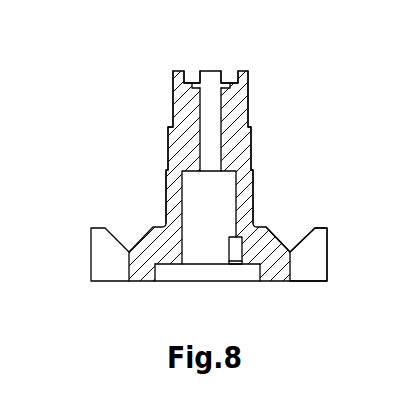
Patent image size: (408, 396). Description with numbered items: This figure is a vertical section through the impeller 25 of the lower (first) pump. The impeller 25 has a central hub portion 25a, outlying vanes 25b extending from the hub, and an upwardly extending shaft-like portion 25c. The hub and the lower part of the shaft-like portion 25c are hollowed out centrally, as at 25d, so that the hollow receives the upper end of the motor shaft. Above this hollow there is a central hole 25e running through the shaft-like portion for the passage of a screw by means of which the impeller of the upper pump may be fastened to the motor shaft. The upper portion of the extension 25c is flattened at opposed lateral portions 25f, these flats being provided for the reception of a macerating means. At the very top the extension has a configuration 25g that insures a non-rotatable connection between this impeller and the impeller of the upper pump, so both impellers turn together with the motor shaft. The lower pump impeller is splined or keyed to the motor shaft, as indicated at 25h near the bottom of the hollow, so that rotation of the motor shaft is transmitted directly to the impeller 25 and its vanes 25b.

The impeller 25 is at (86, 255).
The central hub portion 25a is at (262, 240).
The outlying vanes 25b is at (317, 260).
The shaft-like portion 25c is at (238, 153).
The hollowed out portion 25d is at (196, 242).
The central hole 25e is at (213, 123).
The flattened lateral portions 25f is at (238, 90).
The top configuration 25g is at (185, 71).
The spline or key 25h is at (233, 250).